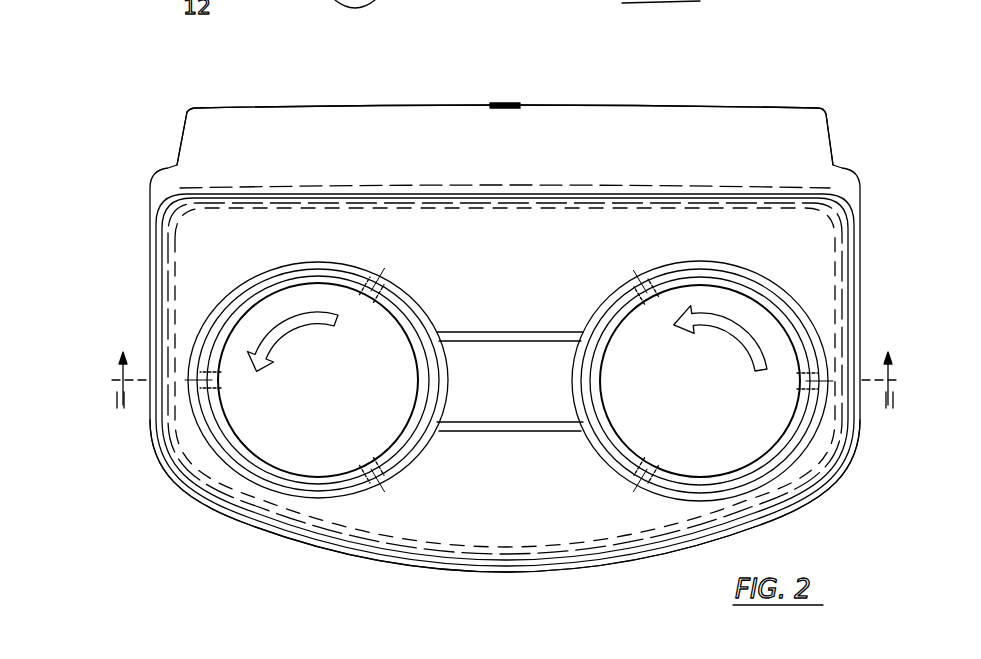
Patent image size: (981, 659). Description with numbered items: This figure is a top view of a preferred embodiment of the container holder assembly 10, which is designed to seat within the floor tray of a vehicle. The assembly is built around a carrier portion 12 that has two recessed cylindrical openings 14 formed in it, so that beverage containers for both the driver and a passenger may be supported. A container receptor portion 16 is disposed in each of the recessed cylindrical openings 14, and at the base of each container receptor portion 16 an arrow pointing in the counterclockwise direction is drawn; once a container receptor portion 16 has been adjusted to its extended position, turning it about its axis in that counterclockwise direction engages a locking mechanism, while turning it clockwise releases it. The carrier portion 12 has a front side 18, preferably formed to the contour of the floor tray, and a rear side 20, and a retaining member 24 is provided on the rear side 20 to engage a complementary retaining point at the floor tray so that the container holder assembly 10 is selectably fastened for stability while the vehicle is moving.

The container holder assembly 10 is at (92, 262).
The carrier portion 12 is at (612, 228).
The recessed cylindrical opening 14 is at (262, 492).
The container receptor portion 16 is at (509, 380).
The front side 18 is at (468, 574).
The rear side 20 is at (672, 103).
The retaining member 24 is at (512, 100).